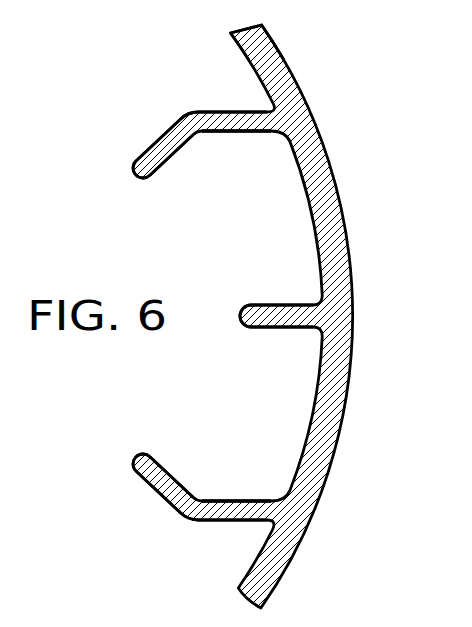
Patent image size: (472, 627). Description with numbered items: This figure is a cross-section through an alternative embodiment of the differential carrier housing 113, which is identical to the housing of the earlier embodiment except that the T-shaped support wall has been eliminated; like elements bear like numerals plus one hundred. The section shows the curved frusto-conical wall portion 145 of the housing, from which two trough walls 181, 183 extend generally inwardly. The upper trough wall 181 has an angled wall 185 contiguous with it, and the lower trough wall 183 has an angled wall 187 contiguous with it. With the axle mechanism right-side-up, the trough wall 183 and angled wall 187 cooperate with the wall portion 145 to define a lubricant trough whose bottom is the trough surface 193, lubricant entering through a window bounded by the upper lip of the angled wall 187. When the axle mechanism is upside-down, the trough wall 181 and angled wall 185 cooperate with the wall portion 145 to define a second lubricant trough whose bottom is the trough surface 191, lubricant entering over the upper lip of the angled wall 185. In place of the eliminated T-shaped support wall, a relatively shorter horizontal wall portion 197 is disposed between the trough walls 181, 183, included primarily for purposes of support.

The differential carrier housing 113 is at (367, 211).
The frusto-conical wall portion 145 is at (247, 45).
The trough wall 181 is at (240, 118).
The trough surface 191 is at (232, 131).
The angled wall 185 is at (163, 142).
The horizontal wall portion 197 is at (273, 313).
The trough surface 193 is at (233, 502).
The trough wall 183 is at (224, 512).
The angled wall 187 is at (157, 483).